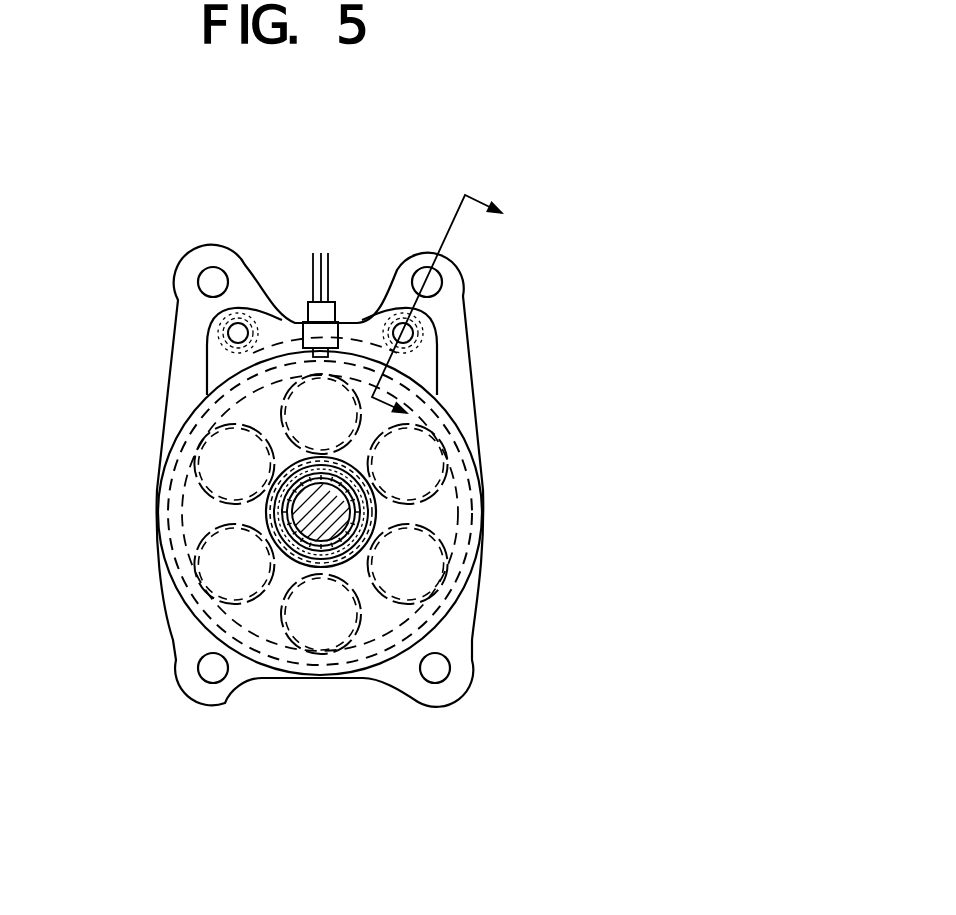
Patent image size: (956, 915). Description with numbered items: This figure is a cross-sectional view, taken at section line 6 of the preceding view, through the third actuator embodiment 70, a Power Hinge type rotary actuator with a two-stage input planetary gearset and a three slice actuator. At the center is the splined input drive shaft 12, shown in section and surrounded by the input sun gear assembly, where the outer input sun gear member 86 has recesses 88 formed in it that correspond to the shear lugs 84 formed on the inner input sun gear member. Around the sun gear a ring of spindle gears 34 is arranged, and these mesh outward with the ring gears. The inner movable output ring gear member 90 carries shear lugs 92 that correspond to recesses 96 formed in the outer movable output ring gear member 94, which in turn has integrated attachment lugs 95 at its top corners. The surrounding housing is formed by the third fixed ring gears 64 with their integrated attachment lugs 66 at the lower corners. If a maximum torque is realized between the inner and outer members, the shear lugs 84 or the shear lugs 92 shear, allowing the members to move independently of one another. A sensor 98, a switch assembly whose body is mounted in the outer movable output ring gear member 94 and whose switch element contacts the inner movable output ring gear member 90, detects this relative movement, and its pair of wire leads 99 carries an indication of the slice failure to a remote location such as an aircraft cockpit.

The section line 6- 6 is at (441, 288).
The splined input drive shaft 12 is at (355, 508).
The spindle gears 34 is at (265, 428).
The third fixed ring gears 64 is at (466, 622).
The integrated attachment lugs 66 is at (223, 692).
The third actuator embodiment 70 is at (608, 208).
The shear lugs 84 is at (402, 481).
The outer input sun gear member 86 is at (268, 511).
The recesses 88 is at (297, 407).
The inner movable output ring gear member 90 is at (456, 430).
The shear lugs 92 is at (285, 300).
The outer movable output ring gear member 94 is at (455, 393).
The integrated attachment lugs 95 is at (203, 248).
The recesses 96 is at (234, 368).
The sensor 98 is at (352, 312).
The wire leads 99 is at (310, 273).